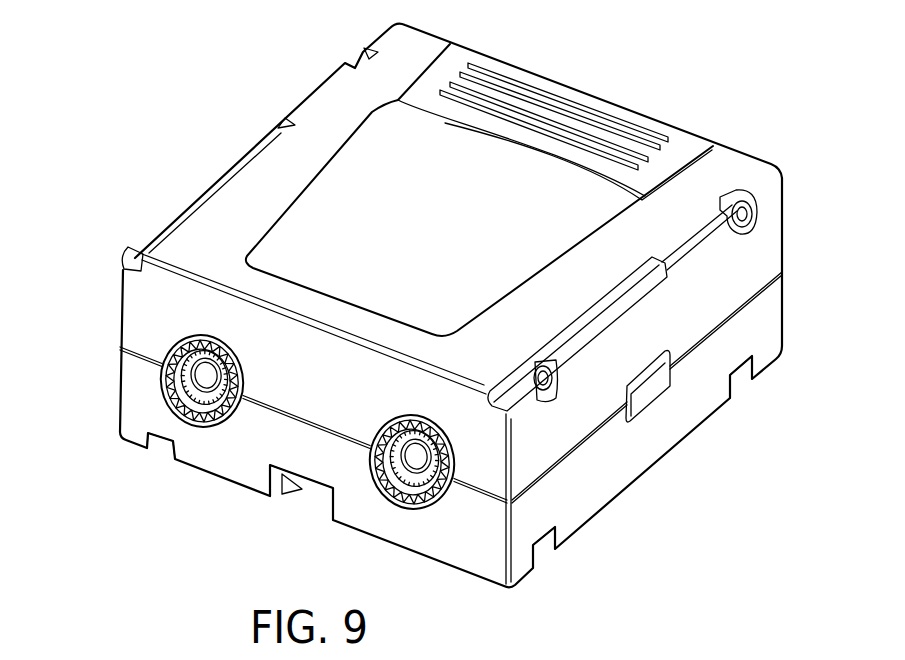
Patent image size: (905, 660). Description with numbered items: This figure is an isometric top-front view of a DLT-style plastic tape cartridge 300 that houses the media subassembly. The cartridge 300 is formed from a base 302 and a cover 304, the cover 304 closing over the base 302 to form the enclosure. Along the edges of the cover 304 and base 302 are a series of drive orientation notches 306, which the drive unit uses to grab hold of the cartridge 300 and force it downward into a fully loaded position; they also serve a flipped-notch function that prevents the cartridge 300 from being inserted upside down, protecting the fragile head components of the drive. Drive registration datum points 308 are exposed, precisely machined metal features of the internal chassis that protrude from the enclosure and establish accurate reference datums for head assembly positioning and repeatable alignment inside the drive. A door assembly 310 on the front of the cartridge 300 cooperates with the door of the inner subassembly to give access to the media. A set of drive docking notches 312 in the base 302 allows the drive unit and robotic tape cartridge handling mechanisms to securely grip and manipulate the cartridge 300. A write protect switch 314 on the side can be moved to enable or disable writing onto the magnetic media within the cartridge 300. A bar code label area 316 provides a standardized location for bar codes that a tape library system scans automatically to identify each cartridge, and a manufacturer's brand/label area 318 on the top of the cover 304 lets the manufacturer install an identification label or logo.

The tape cartridge 300 is at (100, 563).
The base 302 is at (133, 452).
The cover 304 is at (220, 178).
The drive orientation notches 306 is at (138, 248).
The drive registration datum points 308 is at (160, 450).
The door assembly 310 is at (268, 497).
The drive docking notches 312 is at (740, 387).
The write protect switch 314 is at (648, 405).
The bar code label area 316 is at (783, 283).
The manufacturer's brand/label area 318 is at (490, 178).